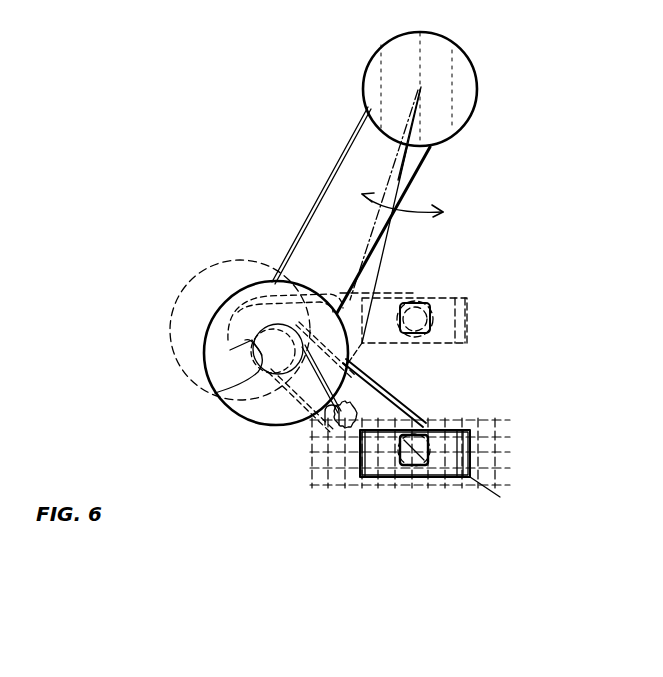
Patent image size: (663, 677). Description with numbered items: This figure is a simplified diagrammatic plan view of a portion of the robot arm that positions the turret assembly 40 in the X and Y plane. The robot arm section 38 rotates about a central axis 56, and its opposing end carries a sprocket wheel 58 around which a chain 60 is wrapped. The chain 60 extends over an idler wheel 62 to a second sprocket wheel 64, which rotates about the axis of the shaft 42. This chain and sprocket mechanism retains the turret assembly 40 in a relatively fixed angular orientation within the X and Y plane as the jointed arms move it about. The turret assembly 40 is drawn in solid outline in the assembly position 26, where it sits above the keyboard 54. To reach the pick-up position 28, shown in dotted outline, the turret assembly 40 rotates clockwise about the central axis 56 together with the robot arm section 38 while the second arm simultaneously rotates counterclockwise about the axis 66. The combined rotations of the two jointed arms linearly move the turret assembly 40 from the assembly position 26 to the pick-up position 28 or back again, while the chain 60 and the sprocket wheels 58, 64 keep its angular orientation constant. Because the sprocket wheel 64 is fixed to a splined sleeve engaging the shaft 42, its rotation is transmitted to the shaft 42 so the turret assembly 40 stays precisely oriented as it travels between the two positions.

The assembly position 26 is at (283, 458).
The pick-up position 28 is at (480, 322).
The robot arm section 38 is at (354, 162).
The turret assembly 40 is at (440, 298).
The shaft 42 is at (427, 463).
The keyboard 54 is at (507, 460).
The central axis 56 is at (420, 90).
The sprocket wheel 58 is at (250, 340).
The chain 60 is at (215, 393).
The idler wheel 62 is at (333, 420).
The sprocket wheel 64 is at (421, 465).
The axis 66 is at (277, 350).